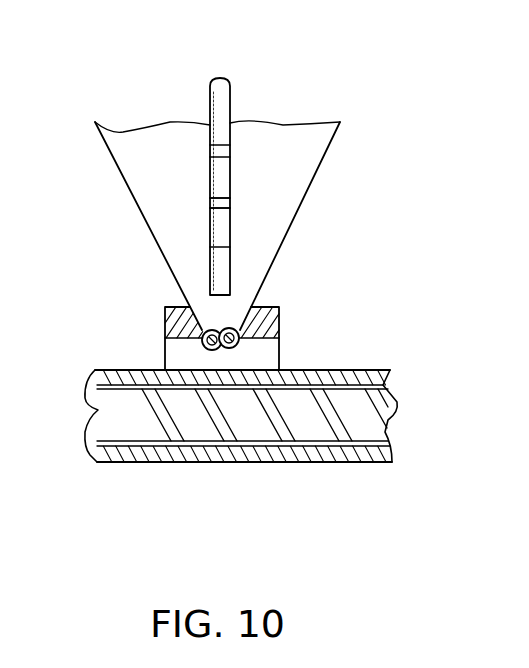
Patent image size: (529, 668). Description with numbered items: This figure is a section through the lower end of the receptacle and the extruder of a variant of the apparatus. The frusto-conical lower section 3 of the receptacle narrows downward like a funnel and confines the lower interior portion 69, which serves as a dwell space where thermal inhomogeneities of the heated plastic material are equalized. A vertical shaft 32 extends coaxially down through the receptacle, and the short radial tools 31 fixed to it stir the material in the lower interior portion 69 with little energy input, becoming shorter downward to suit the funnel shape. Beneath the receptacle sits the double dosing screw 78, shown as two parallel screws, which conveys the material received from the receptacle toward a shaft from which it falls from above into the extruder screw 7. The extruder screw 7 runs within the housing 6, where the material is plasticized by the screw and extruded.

The frusto-conical lower section 3 is at (139, 210).
The vertical shaft 32 is at (218, 95).
The tools 31 is at (231, 245).
The lower interior portion 69 is at (185, 167).
The housing 6 is at (117, 370).
The dosing screws 78 is at (204, 333).
The extruder screw 7 is at (140, 418).